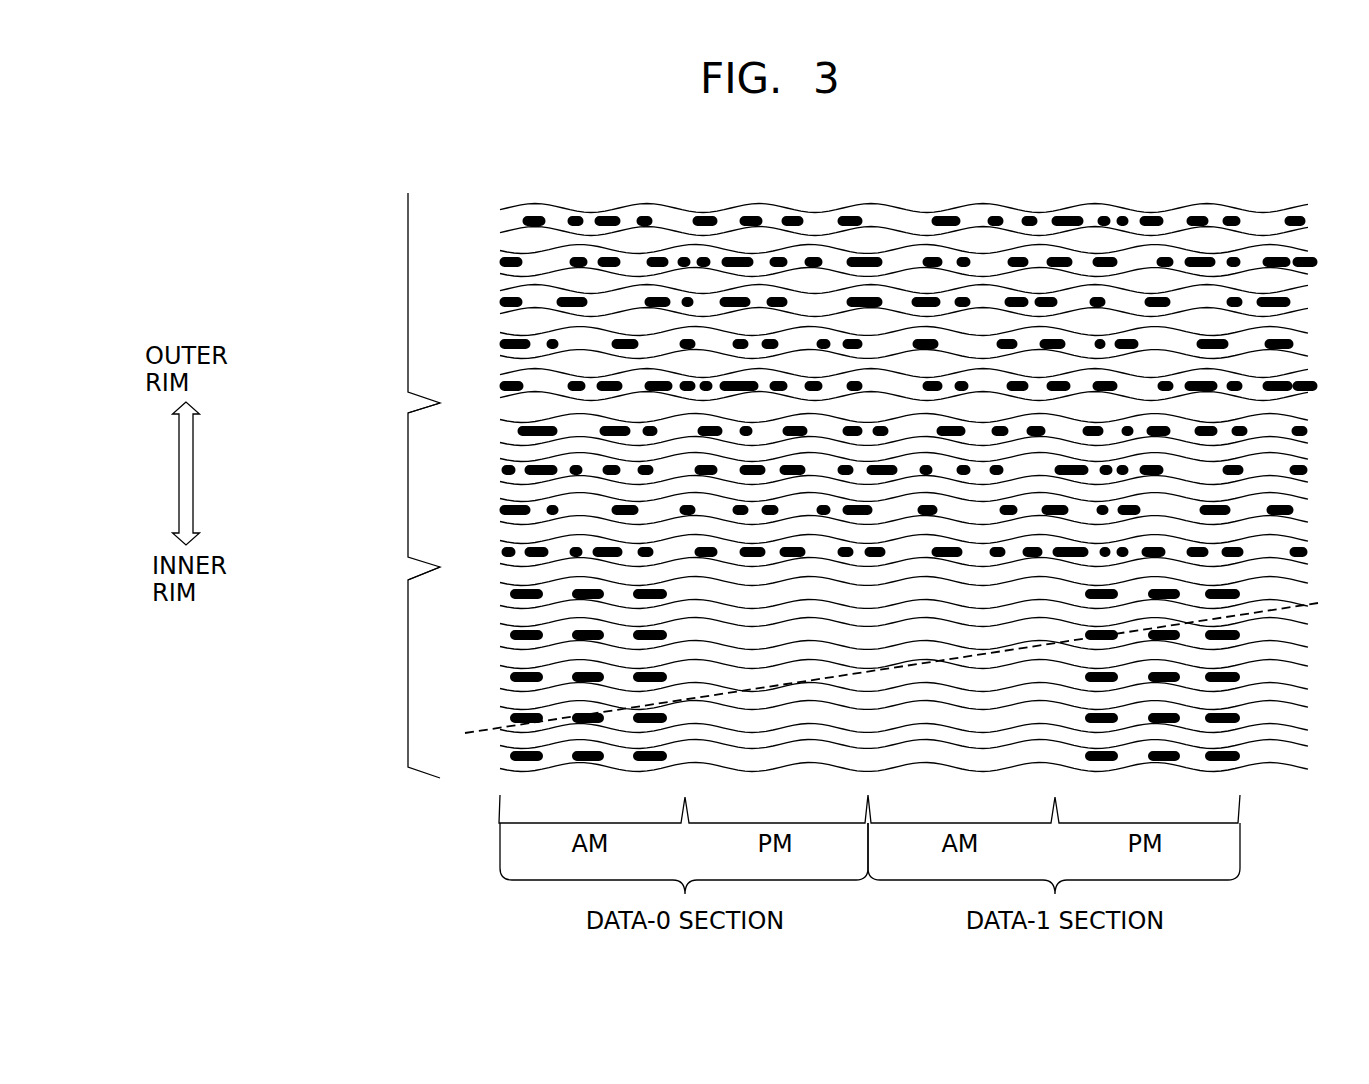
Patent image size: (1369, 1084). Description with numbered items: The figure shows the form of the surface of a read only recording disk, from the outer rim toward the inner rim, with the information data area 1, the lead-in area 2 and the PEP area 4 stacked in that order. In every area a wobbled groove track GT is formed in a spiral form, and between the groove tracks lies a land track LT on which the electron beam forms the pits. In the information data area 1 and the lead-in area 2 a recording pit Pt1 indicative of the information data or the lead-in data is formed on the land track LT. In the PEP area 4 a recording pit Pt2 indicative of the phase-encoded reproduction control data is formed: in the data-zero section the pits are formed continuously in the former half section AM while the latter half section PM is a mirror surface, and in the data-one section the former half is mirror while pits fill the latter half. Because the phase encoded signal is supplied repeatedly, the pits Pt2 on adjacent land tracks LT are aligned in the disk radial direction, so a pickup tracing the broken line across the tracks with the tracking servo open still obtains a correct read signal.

The information data area 1 is at (802, 303).
The lead-in area 2 is at (799, 491).
The PEP area 4 is at (800, 672).
The land track LT is at (505, 220).
The groove track GT is at (508, 248).
The recording pit Pt1 is at (510, 345).
The recording pit Pt2 is at (511, 715).